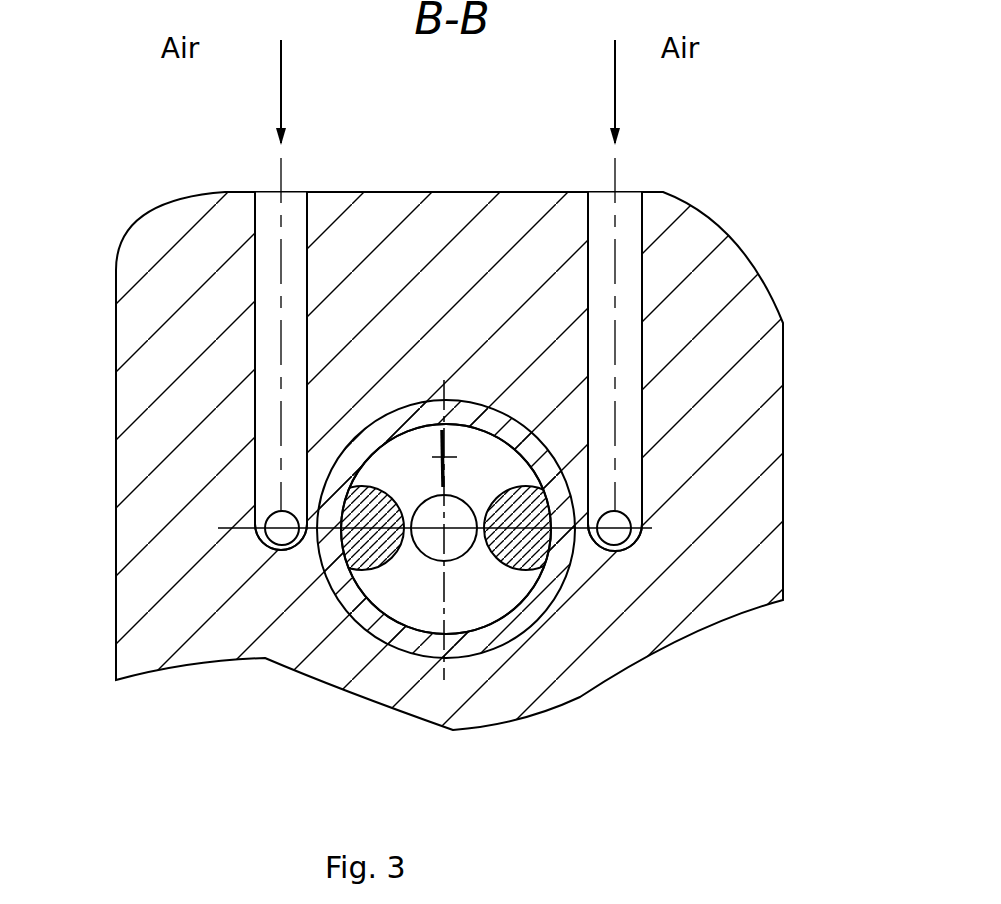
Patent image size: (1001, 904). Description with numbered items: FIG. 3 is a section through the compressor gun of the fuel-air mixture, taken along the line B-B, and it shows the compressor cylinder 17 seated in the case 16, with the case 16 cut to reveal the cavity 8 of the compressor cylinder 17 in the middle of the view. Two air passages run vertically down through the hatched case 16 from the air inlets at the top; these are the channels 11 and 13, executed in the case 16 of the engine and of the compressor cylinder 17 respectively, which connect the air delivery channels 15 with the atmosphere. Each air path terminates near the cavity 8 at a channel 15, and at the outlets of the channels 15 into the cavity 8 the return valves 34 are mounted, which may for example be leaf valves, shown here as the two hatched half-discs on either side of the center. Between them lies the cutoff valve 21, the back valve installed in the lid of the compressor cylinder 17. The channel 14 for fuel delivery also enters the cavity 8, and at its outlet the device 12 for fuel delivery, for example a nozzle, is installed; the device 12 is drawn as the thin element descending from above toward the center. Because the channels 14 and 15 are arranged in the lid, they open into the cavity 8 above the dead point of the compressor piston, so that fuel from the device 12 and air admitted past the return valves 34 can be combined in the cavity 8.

The cavity of the compressor cylinder 8 is at (403, 577).
The channel 11 is at (444, 295).
The device for fuel delivery 12 is at (442, 430).
The channel 13 is at (272, 520).
The channel for fuel delivery 14 is at (440, 470).
The channel for air delivery 15 is at (283, 555).
The case 16 is at (708, 363).
The compressor cylinder 17 is at (448, 638).
The cutoff valve 21 is at (457, 547).
The return valves 34 is at (358, 517).